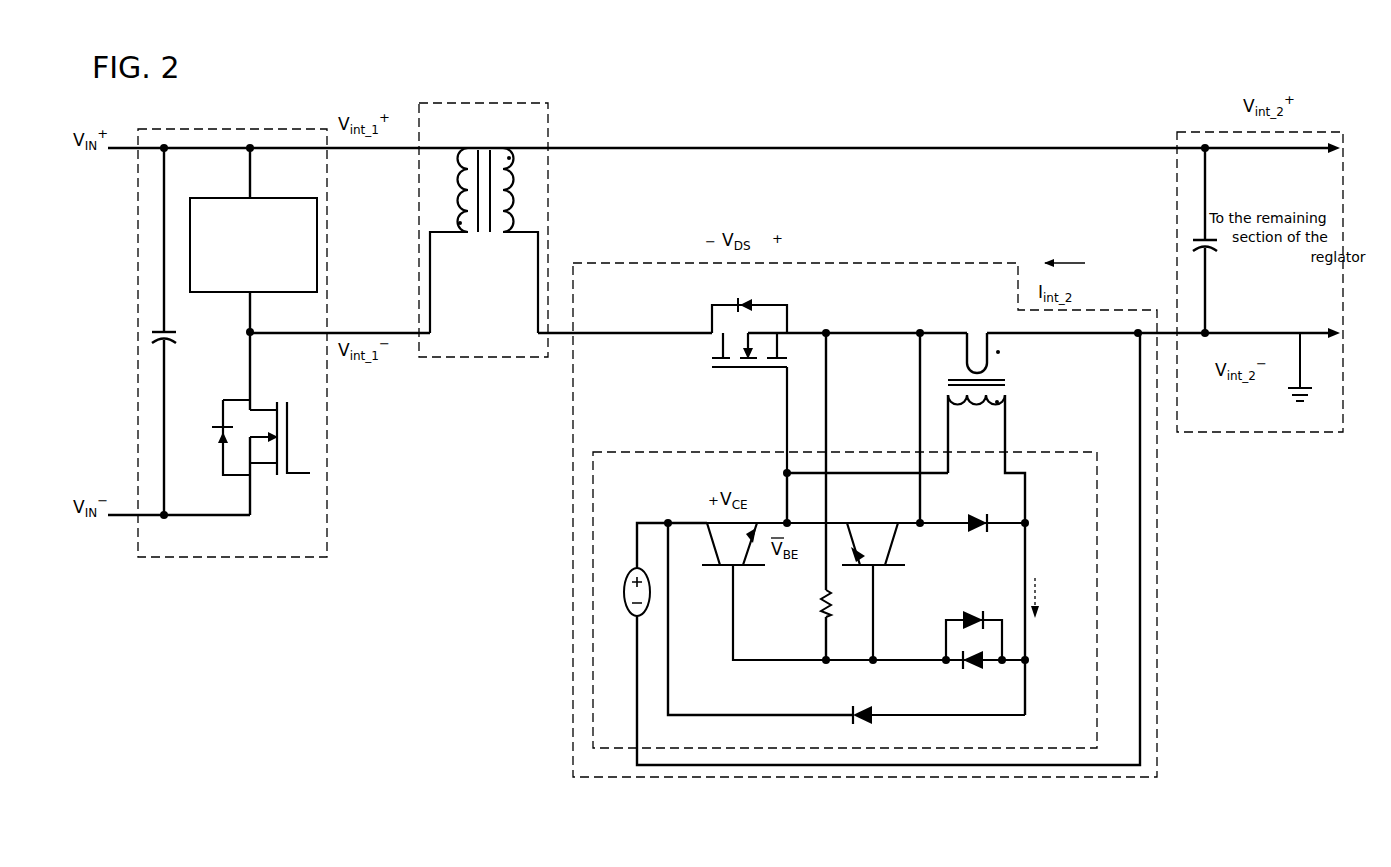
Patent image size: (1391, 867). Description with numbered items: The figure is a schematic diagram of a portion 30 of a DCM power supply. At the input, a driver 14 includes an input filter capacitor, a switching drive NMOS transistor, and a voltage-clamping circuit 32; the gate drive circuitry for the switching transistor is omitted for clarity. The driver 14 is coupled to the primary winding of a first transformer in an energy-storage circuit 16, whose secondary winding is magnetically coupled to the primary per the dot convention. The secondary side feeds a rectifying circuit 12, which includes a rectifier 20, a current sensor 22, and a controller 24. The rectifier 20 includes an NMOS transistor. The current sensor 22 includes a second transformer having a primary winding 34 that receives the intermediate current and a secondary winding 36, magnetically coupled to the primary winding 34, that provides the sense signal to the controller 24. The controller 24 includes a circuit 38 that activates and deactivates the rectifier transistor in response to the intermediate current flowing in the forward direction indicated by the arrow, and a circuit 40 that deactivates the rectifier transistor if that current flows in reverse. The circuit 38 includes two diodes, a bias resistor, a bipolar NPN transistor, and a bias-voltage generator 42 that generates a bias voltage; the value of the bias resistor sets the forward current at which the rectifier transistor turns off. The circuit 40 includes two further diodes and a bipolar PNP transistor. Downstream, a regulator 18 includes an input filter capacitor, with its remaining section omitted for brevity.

The rectifying circuit 12 is at (1158, 522).
The driver 14 is at (255, 129).
The energy-storage circuit 16 is at (520, 103).
The regulator 18 is at (1330, 132).
The rectifier 20 is at (775, 294).
The current sensor 22 is at (945, 318).
The controller 24 is at (748, 748).
The portion of the power supply 30 is at (944, 121).
The voltage-clamping circuit 32 is at (236, 198).
The primary winding 34 is at (960, 350).
The secondary winding 36 is at (1012, 415).
The circuit 38 is at (645, 705).
The circuit 40 is at (1040, 560).
The bias-voltage generator 42 is at (623, 590).